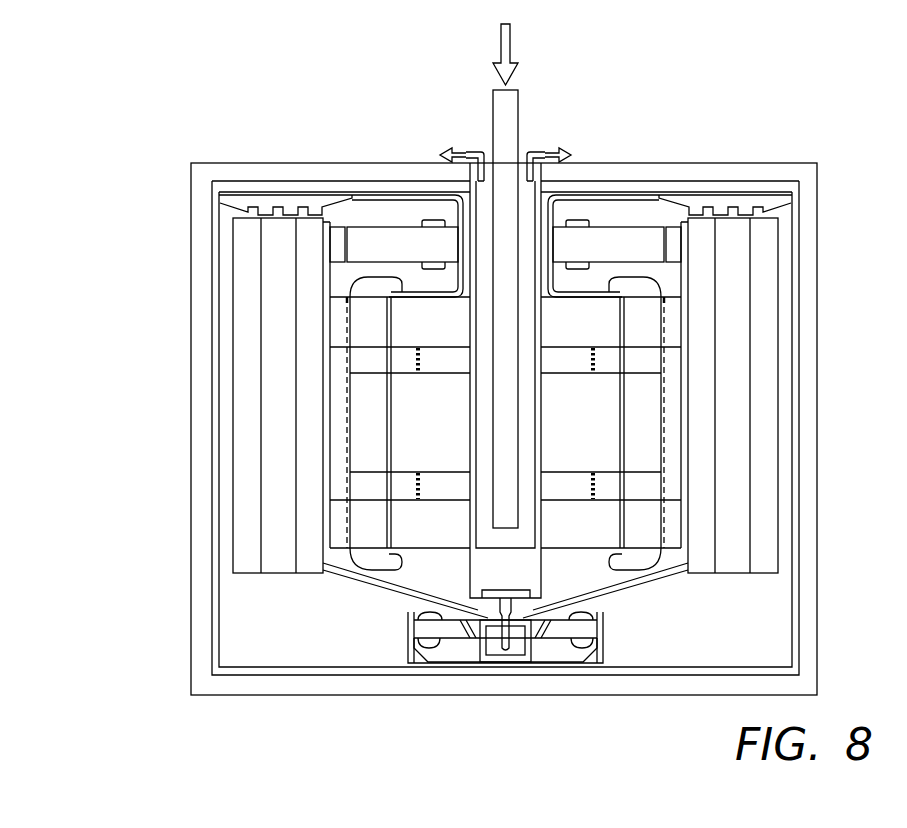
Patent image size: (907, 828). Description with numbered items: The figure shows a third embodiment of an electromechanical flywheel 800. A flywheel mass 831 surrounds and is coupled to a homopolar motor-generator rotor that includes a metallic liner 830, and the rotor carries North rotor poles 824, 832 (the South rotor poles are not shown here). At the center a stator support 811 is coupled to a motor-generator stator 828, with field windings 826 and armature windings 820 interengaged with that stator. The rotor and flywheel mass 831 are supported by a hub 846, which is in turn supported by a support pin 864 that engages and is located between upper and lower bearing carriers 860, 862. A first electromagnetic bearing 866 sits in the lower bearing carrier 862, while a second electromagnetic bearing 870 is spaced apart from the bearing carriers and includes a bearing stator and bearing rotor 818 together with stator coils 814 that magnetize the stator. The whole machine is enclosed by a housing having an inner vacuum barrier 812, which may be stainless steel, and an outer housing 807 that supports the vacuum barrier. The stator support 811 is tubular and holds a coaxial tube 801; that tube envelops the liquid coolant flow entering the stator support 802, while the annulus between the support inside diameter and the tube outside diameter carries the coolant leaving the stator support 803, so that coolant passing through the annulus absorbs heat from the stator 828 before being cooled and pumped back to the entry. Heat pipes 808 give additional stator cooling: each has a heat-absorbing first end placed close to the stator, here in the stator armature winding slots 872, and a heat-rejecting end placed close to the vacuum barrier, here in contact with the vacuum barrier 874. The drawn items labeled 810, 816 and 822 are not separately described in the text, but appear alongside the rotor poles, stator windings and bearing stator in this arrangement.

The electromechanical flywheel 800 is at (124, 172).
The coaxial tube 801 is at (513, 103).
The liquid coolant flow entering the stator support 802 is at (508, 42).
The coolant flow leaving the stator support 803 is at (470, 150).
The outer housing 807 is at (186, 384).
The heat pipes 808 is at (553, 212).
The coil 810 is at (737, 202).
The stator support 811 is at (462, 215).
The inner vacuum barrier 812 is at (218, 630).
The stator coils 814 is at (587, 222).
The magnet connector 816 is at (673, 243).
The bearing stator 818 is at (382, 225).
The armature windings 820 is at (358, 287).
The guide 822 is at (347, 358).
The North rotor pole 824 is at (673, 323).
The field windings 826 is at (598, 352).
The motor-generator stator 828 is at (650, 405).
The metallic liner 830 is at (678, 480).
The flywheel mass 831 is at (321, 578).
The North rotor pole 832 is at (678, 525).
The hub 846 is at (648, 578).
The upper bearing carrier 860 is at (464, 575).
The lower bearing carrier 862 is at (396, 641).
The support pin 864 is at (506, 645).
The first electromagnetic bearing 866 is at (456, 652).
The second electromagnetic bearing 870 is at (344, 208).
The stator armature winding slots 872 is at (622, 280).
The heat pipe contact with vacuum barrier 874 is at (645, 200).